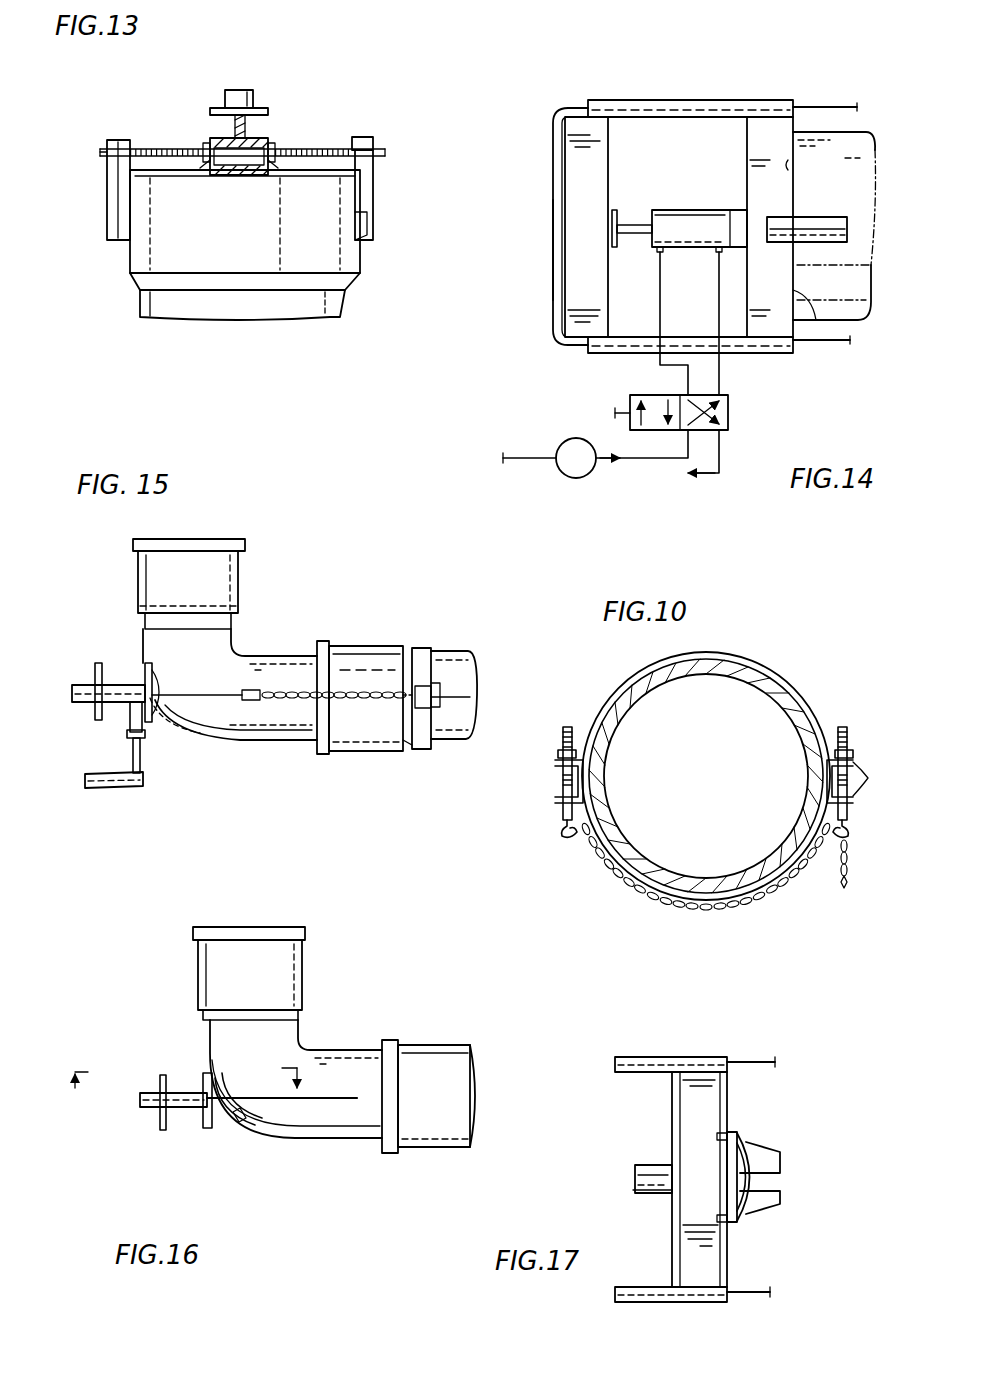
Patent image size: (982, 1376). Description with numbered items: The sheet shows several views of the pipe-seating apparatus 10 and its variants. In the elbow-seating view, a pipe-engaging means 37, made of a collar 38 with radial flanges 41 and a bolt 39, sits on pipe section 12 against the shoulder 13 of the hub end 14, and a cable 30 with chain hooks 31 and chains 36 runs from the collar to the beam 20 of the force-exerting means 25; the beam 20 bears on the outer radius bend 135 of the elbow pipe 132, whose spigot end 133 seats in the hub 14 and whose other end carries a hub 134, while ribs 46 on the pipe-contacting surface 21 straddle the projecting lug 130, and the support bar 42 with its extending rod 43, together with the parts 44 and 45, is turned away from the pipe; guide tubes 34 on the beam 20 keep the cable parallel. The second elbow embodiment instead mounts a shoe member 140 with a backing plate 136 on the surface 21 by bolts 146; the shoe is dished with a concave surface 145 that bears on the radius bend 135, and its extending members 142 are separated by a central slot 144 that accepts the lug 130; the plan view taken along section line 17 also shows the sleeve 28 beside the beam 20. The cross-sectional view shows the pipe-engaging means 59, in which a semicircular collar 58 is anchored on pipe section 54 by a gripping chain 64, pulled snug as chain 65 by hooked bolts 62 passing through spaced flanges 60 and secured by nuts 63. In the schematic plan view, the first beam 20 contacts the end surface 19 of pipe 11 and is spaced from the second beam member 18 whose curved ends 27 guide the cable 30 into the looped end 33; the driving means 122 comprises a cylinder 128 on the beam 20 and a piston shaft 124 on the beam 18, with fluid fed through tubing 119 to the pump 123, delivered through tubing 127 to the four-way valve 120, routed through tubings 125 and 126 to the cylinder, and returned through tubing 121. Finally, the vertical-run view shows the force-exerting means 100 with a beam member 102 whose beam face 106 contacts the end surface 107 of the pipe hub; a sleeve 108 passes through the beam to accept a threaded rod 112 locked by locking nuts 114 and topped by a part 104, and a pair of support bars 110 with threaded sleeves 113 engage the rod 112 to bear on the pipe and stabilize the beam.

In FIG. 14, the pipe-seating apparatus 10 is at (698, 65).
In FIG. 15, the pipe-seating apparatus 10 is at (83, 629).
In FIG. 16, the pipe-seating apparatus 10 is at (163, 1000).
In FIG. 13, the pipe section 11 is at (345, 297).
In FIG. 14, the pipe section 11 is at (872, 265).
In FIG. 15, the pipe section 12 is at (465, 651).
In FIG. 16, the pipe section 12 is at (477, 1083).
In FIG. 15, the shoulder 13 is at (410, 745).
In FIG. 13, the hub end 14 is at (363, 258).
In FIG. 14, the hub end 14 is at (866, 130).
In FIG. 15, the hub end 14 is at (360, 643).
In FIG. 16, the hub end 14 is at (433, 1043).
In FIG. 16, the section line 17 is at (188, 1085).
In FIG. 14, the second beam member 18 is at (582, 180).
In FIG. 14, the end surface 19 is at (860, 157).
In FIG. 14, the first beam 20 is at (758, 368).
In FIG. 15, the first beam 20 is at (100, 667).
In FIG. 16, the first beam 20 is at (160, 1133).
In FIG. 17, the first beam 20 is at (673, 1082).
In FIG. 14, the pipe-contacting surface 21 is at (815, 356).
In FIG. 16, the pipe-contacting surface 21 is at (210, 1082).
In FIG. 17, the pipe-contacting surface 21 is at (728, 1093).
In FIG. 14, the force-exerting means 25 is at (653, 97).
In FIG. 14, the curved ends 27 is at (555, 110).
In FIG. 17, the sleeve 28 is at (643, 1198).
In FIG. 14, the cable 30 is at (833, 104).
In FIG. 15, the cable 30 is at (186, 729).
In FIG. 16, the cable 30 is at (348, 1105).
In FIG. 17, the cable 30 is at (753, 1060).
In FIG. 15, the chain hooks 31 is at (255, 701).
In FIG. 14, the looped end 33 is at (552, 260).
In FIG. 14, the guide tubes 34 is at (748, 100).
In FIG. 15, the guide tubes 34 is at (74, 699).
In FIG. 16, the guide tubes 34 is at (147, 1110).
In FIG. 17, the guide tubes 34 is at (635, 1058).
In FIG. 15, the chains 36 is at (369, 698).
In FIG. 15, the pipe-engaging means 37 is at (419, 636).
In FIG. 15, the collar 38 is at (428, 648).
In FIG. 15, the bolt 39 is at (440, 685).
In FIG. 15, the flanges 41 is at (470, 698).
In FIG. 14, the support bar 42 is at (833, 217).
In FIG. 15, the support bar 42 is at (94, 839).
In FIG. 15, the extending rod 43 is at (133, 761).
In FIG. 15, the nut 44 is at (127, 735).
In FIG. 15, the bolt 45 is at (129, 716).
In FIG. 15, the ribs 46 is at (157, 680).
In FIG. 10, the pipe section 54 is at (662, 867).
In FIG. 10, the semicircular collar 58 is at (717, 650).
In FIG. 10, the pipe-engaging means 59 is at (803, 668).
In FIG. 10, the flanges 60 is at (555, 767).
In FIG. 10, the hooked bolt 62 is at (562, 825).
In FIG. 10, the nut 63 is at (560, 750).
In FIG. 10, the gripping chain 64 is at (713, 906).
In FIG. 10, the gripping chain 65 is at (848, 853).
In FIG. 13, the force-exerting means 100 is at (289, 108).
In FIG. 13, the beam member 102 is at (215, 108).
In FIG. 13, the knob 104 is at (267, 82).
In FIG. 13, the beam face 106 is at (245, 221).
In FIG. 13, the end surface 107 is at (123, 170).
In FIG. 13, the sleeve 108 is at (262, 150).
In FIG. 13, the support bars 110 is at (373, 193).
In FIG. 13, the threaded rod 112 is at (162, 127).
In FIG. 13, the threaded sleeve 113 is at (367, 140).
In FIG. 13, the locking nuts 114 is at (208, 167).
In FIG. 14, the tubing 119 is at (515, 463).
In FIG. 14, the four-way valve 120 is at (732, 422).
In FIG. 14, the tubing 121 is at (702, 478).
In FIG. 14, the driving means 122 is at (683, 165).
In FIG. 14, the pump 123 is at (567, 440).
In FIG. 14, the piston shaft 124 is at (635, 222).
In FIG. 14, the tubing 125 is at (660, 273).
In FIG. 14, the tubing 126 is at (718, 308).
In FIG. 14, the tubing 127 is at (635, 462).
In FIG. 14, the cylinder 128 is at (710, 208).
In FIG. 15, the projecting lug 130 is at (151, 808).
In FIG. 16, the projecting lug 130 is at (227, 1113).
In FIG. 15, the elbow pipe 132 is at (241, 629).
In FIG. 16, the elbow pipe 132 is at (302, 1047).
In FIG. 15, the spigot end 133 is at (289, 651).
In FIG. 16, the spigot end 133 is at (352, 1052).
In FIG. 15, the hub 134 is at (243, 562).
In FIG. 16, the hub 134 is at (307, 947).
In FIG. 15, the outer radius bend 135 is at (193, 804).
In FIG. 16, the outer radius bend 135 is at (293, 1142).
In FIG. 16, the backing plate 136 is at (211, 1130).
In FIG. 17, the backing plate 136 is at (734, 1132).
In FIG. 16, the shoe member 140 is at (222, 1068).
In FIG. 17, the shoe member 140 is at (752, 1155).
In FIG. 16, the extending members 142 is at (262, 1130).
In FIG. 17, the extending members 142 is at (783, 1167).
In FIG. 17, the central slot 144 is at (774, 1181).
In FIG. 17, the concave surface 145 is at (752, 1198).
In FIG. 17, the bolts 146 is at (741, 1137).